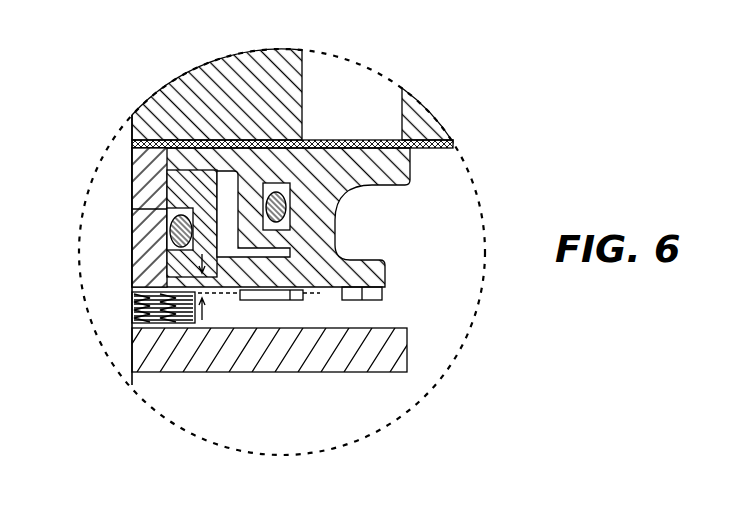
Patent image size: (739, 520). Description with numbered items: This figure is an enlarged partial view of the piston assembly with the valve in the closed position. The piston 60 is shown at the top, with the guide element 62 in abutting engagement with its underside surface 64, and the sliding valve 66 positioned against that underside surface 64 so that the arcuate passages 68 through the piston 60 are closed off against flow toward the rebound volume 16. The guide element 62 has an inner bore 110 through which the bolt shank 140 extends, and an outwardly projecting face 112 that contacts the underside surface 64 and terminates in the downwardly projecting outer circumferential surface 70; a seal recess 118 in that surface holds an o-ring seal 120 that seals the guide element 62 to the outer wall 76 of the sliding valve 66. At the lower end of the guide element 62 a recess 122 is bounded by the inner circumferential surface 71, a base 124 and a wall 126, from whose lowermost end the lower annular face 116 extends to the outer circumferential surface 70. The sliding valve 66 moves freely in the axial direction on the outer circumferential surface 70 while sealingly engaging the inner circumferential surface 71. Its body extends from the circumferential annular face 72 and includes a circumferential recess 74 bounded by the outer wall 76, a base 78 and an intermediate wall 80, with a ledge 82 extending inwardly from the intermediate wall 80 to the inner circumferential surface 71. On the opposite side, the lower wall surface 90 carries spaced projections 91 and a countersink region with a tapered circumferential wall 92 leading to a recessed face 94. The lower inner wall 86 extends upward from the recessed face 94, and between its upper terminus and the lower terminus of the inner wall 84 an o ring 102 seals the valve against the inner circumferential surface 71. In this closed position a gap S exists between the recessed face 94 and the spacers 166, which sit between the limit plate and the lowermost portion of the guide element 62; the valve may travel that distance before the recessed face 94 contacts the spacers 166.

The rebound volume 16 is at (446, 357).
The piston 60 is at (205, 140).
The guide element 62 is at (160, 165).
The underside surface 64 is at (440, 145).
The sliding valve 66 is at (410, 165).
The arcuate passages 68 is at (323, 72).
The outer circumferential surface 70 is at (321, 140).
The inner circumferential surface 71 is at (167, 188).
The circumferential annular face 72 is at (374, 140).
The circumferential recess 74 is at (283, 287).
The outer wall 76 is at (337, 231).
The base 78 is at (258, 287).
The intermediate wall 80 is at (158, 222).
The ledge 82 is at (133, 119).
The inner wall 84 is at (167, 206).
The lower inner wall 86 is at (160, 287).
The lower wall surface 90 is at (171, 231).
The spaced projections 91 is at (383, 294).
The tapered circumferential wall 92 is at (227, 258).
The recessed face 94 is at (160, 306).
The o ring 102 is at (167, 263).
The inner bore 110 is at (167, 213).
The outwardly projecting face 112 is at (190, 170).
The lower annular face 116 is at (295, 287).
The seal recess 118 is at (363, 140).
The o-ring seal 120 is at (290, 200).
The recess 122 is at (213, 168).
The base 124 is at (208, 165).
The wall 126 is at (275, 49).
The bolt shank 140 is at (106, 332).
The spacers 166 is at (143, 393).
The gap S is at (201, 310).